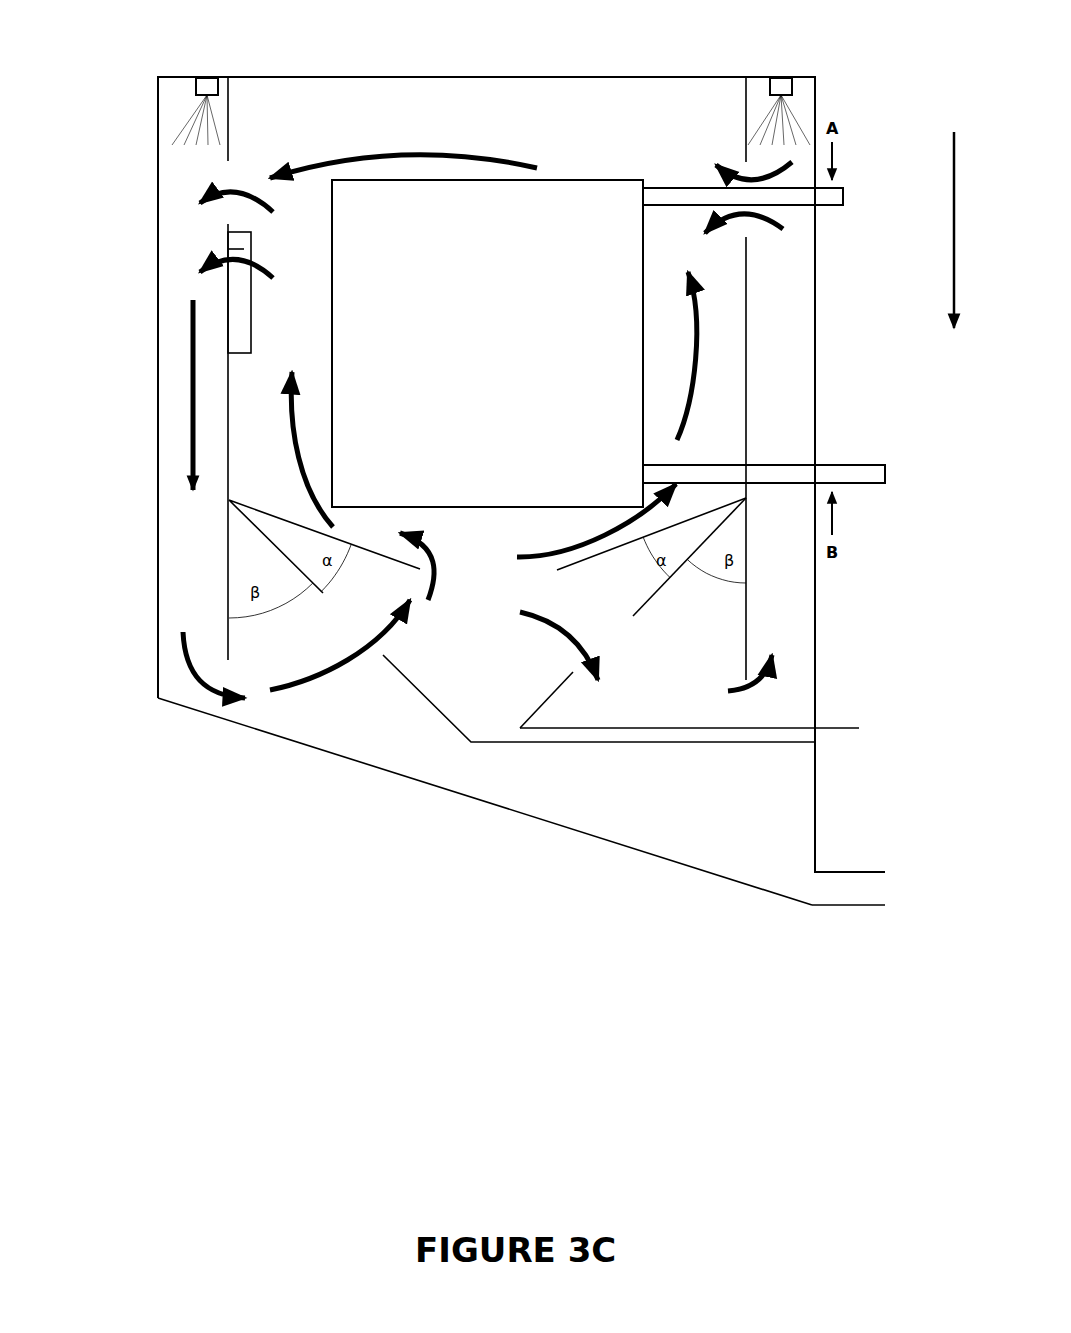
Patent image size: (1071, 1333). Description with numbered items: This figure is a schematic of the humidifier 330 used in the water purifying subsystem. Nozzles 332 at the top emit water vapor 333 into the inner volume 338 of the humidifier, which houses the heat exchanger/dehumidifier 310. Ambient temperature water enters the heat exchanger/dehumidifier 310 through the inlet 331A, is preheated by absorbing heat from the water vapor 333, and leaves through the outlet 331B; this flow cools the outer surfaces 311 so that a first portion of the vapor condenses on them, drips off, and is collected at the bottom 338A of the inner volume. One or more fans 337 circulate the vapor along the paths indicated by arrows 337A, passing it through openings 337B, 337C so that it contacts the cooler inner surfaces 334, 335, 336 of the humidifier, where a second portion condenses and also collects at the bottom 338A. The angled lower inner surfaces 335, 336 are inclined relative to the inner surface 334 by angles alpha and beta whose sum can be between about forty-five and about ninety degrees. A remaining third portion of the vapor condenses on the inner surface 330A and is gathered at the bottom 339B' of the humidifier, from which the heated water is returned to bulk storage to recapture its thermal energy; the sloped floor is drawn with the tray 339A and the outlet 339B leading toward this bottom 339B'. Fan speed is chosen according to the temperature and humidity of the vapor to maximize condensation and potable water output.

The humidifier 330 is at (470, 127).
The inner surface 330A is at (158, 472).
The heat exchanger/dehumidifier 310 is at (487, 343).
The nozzles 332 is at (208, 84).
The water vapor 333 is at (207, 122).
The opening 337C is at (228, 298).
The inner surface 334 is at (747, 313).
The fan 337 is at (244, 249).
The inner volume 338 is at (280, 388).
The outer surfaces 311 is at (643, 373).
The arrows 337A is at (398, 153).
The opening 337B is at (232, 182).
The outlet 331B is at (827, 202).
The inlet 331A is at (838, 480).
The angled lower inner surface 336 is at (700, 518).
The angled lower inner surface 335 is at (657, 597).
The bottom of the inner volume 338A is at (492, 742).
The drain tray 339A is at (859, 728).
The drain outlet 339B is at (880, 927).
The bottom of the humidifier 339B' is at (489, 841).